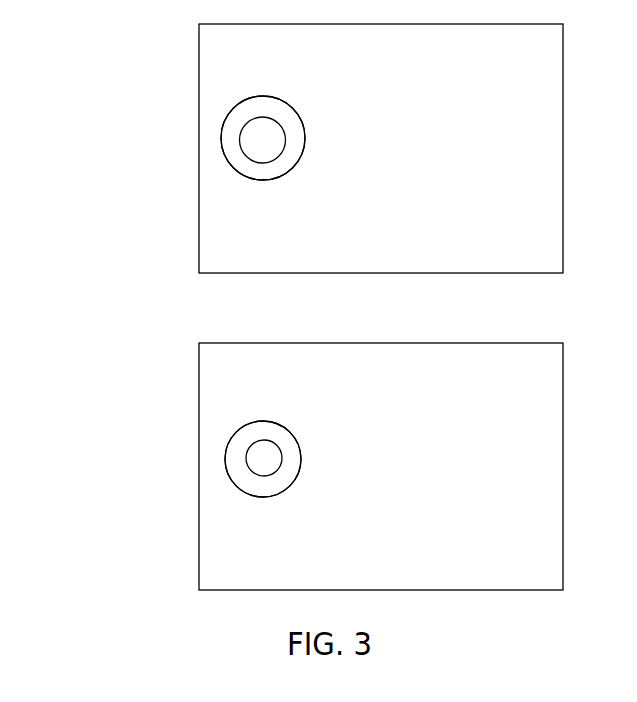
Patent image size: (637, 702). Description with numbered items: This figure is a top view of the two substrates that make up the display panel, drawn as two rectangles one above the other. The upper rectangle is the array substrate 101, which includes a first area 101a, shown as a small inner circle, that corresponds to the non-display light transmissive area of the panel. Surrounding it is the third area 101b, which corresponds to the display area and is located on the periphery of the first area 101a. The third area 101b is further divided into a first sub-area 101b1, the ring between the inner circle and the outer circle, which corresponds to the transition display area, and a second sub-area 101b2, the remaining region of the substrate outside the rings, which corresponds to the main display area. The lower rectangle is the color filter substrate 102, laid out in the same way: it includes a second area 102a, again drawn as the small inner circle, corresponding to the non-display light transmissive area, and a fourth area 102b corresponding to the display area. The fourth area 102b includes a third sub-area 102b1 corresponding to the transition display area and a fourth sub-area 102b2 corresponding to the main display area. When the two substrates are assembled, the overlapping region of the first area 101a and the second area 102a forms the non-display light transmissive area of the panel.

The array substrate 101 is at (227, 80).
The first area 101a is at (256, 132).
The third area 101b is at (102, 145).
The first sub-area 101b1 is at (242, 160).
The second sub-area 101b2 is at (242, 204).
The color filter substrate 102 is at (225, 380).
The second area 102a is at (259, 455).
The fourth area 102b is at (102, 467).
The third sub-area 102b1 is at (251, 485).
The fourth sub-area 102b2 is at (244, 527).